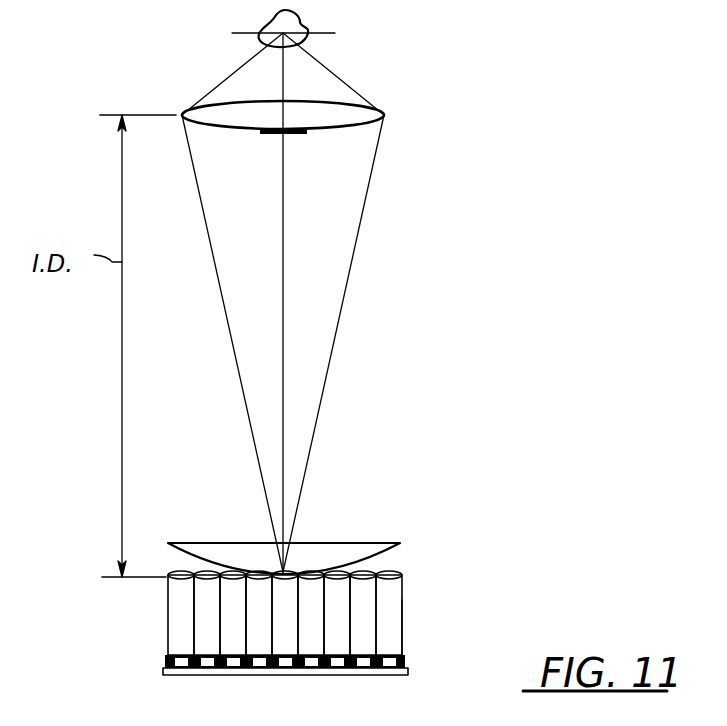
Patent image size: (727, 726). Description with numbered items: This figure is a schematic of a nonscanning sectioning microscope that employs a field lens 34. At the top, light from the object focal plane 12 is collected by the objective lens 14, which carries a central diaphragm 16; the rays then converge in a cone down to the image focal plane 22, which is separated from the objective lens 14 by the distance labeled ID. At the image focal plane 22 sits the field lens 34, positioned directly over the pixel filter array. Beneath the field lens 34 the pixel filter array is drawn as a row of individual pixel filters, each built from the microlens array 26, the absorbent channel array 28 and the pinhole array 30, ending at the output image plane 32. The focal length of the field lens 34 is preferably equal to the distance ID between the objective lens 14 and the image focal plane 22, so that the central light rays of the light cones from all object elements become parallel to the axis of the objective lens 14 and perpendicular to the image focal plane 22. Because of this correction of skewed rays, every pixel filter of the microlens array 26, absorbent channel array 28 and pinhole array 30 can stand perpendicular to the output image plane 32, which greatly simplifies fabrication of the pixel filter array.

The object focal plane 12 is at (302, 37).
The objective lens 14 is at (351, 117).
The central diaphragm 16 is at (270, 134).
The image focal plane 22 is at (104, 580).
The microlens array 26 is at (402, 576).
The absorbent channel array 28 is at (402, 630).
The pinhole array 30 is at (405, 660).
The output image plane 32 is at (408, 671).
The field lens 34 is at (394, 545).